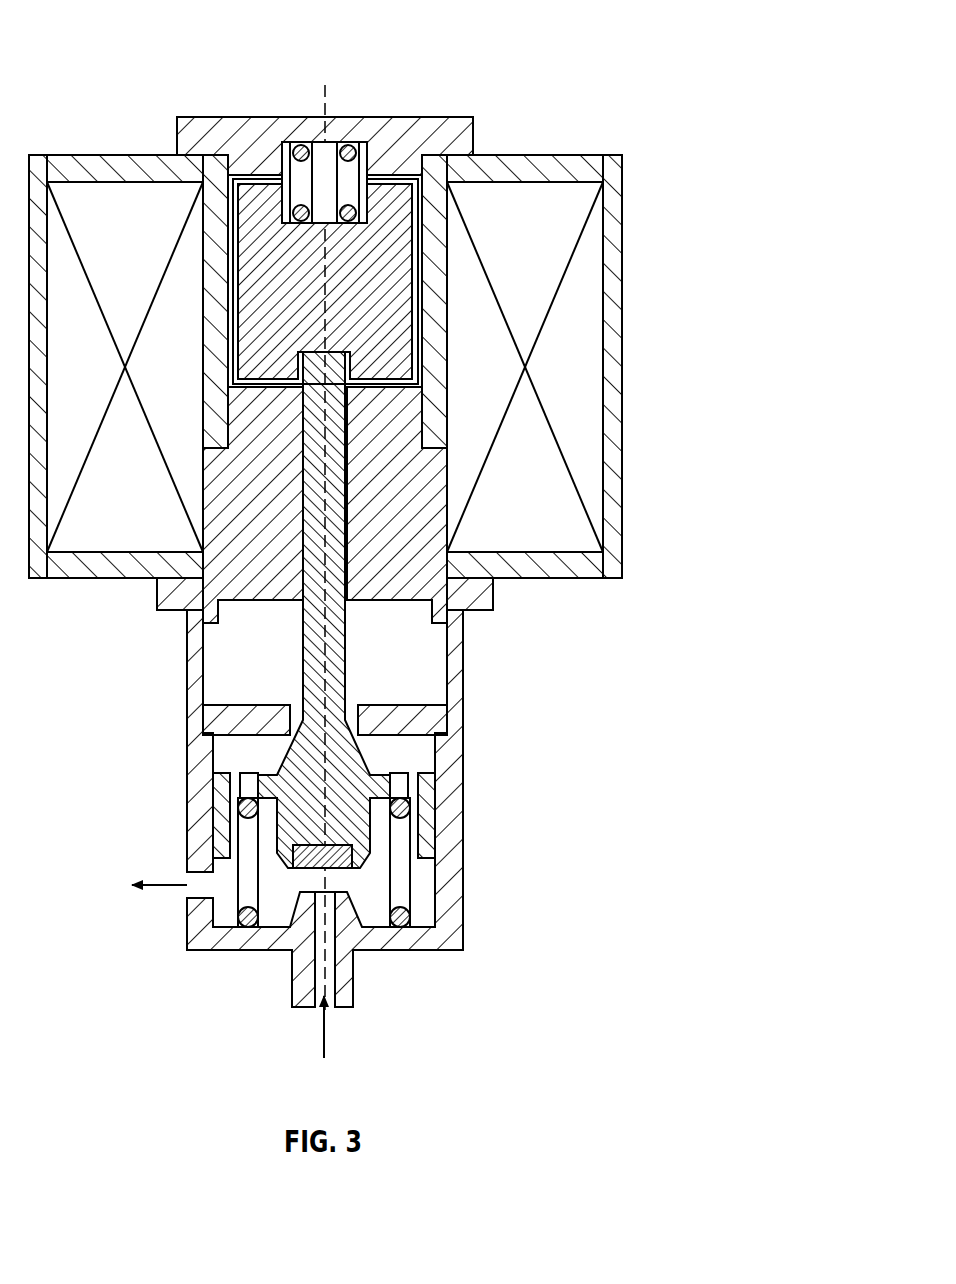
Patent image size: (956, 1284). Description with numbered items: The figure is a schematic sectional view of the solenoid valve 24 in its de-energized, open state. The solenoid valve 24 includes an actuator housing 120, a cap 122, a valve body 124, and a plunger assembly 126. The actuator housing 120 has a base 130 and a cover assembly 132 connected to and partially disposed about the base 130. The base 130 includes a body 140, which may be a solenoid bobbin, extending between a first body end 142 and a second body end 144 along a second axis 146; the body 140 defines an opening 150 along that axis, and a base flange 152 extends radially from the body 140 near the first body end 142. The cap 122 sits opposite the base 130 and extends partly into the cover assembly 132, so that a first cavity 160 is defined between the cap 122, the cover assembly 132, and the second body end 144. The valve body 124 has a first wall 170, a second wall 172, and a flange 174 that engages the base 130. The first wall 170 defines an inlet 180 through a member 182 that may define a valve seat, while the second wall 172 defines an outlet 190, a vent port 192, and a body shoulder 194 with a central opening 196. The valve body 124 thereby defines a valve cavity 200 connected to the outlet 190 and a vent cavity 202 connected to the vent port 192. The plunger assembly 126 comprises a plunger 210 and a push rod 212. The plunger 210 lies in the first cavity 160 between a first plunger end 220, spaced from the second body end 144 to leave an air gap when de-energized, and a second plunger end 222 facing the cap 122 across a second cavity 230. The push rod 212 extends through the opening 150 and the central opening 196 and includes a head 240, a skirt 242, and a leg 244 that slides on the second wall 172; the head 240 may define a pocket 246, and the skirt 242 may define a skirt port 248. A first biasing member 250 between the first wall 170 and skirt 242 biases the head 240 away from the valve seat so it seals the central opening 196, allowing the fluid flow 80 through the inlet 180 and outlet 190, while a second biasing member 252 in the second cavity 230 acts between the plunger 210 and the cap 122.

The solenoid valve 24 is at (618, 44).
The fluid flow 80 is at (152, 878).
The actuator housing 120 is at (614, 150).
The cap 122 is at (180, 112).
The valve body 124 is at (472, 966).
The plunger assembly 126 is at (430, 645).
The base 130 is at (568, 580).
The cover assembly 132 is at (490, 155).
The body 140 is at (414, 506).
The first body end 142 is at (408, 572).
The second body end 144 is at (415, 456).
The second axis 146 is at (322, 108).
The opening 150 is at (294, 512).
The base flange 152 is at (606, 572).
The first cavity 160 is at (283, 392).
The first wall 170 is at (400, 952).
The second wall 172 is at (456, 845).
The flange 174 is at (490, 594).
The inlet 180 is at (330, 1010).
The member 182 is at (293, 985).
The outlet 190 is at (195, 893).
The vent port 192 is at (193, 668).
The body shoulder 194 is at (456, 735).
The central opening 196 is at (297, 725).
The valve cavity 200 is at (422, 892).
The vent cavity 202 is at (356, 655).
The plunger 210 is at (400, 247).
The push rod 212 is at (292, 562).
The first plunger end 220 is at (400, 385).
The second plunger end 222 is at (368, 146).
The second cavity 230 is at (372, 152).
The head 240 is at (356, 760).
The skirt 242 is at (246, 800).
The leg 244 is at (222, 830).
The pocket 246 is at (296, 872).
The skirt port 248 is at (248, 785).
The first biasing member 250 is at (362, 866).
The second biasing member 252 is at (275, 165).